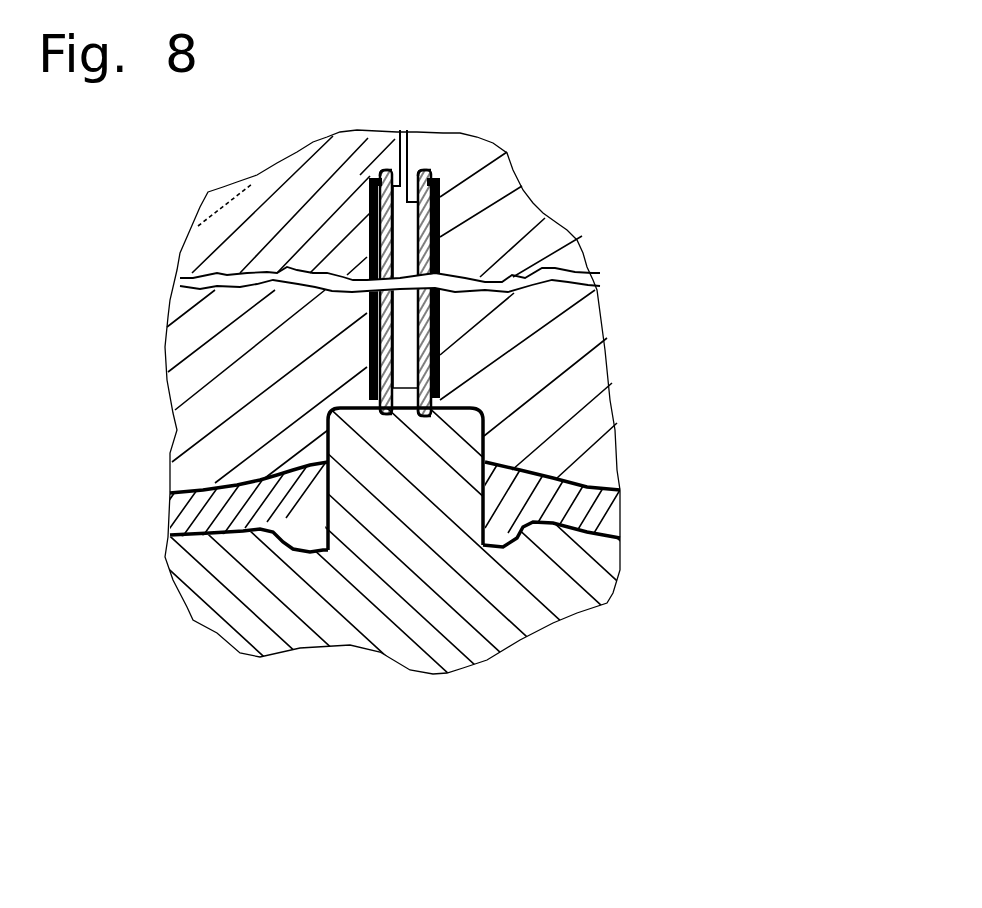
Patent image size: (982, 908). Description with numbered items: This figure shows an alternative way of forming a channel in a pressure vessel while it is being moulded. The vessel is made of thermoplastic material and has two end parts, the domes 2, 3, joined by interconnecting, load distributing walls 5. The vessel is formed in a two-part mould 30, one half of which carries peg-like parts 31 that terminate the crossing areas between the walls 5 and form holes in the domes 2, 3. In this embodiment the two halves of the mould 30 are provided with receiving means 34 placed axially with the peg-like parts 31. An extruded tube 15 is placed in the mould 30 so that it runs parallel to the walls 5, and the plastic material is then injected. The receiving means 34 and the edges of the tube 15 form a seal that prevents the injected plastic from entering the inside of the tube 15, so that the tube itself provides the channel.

The mould 30 is at (479, 478).
The receiving means 34 is at (425, 167).
The walls 5 is at (367, 261).
The extruded tube 15 is at (418, 252).
The dome 2 is at (501, 508).
The dome 3 is at (608, 508).
The peg-like parts 31 is at (391, 486).